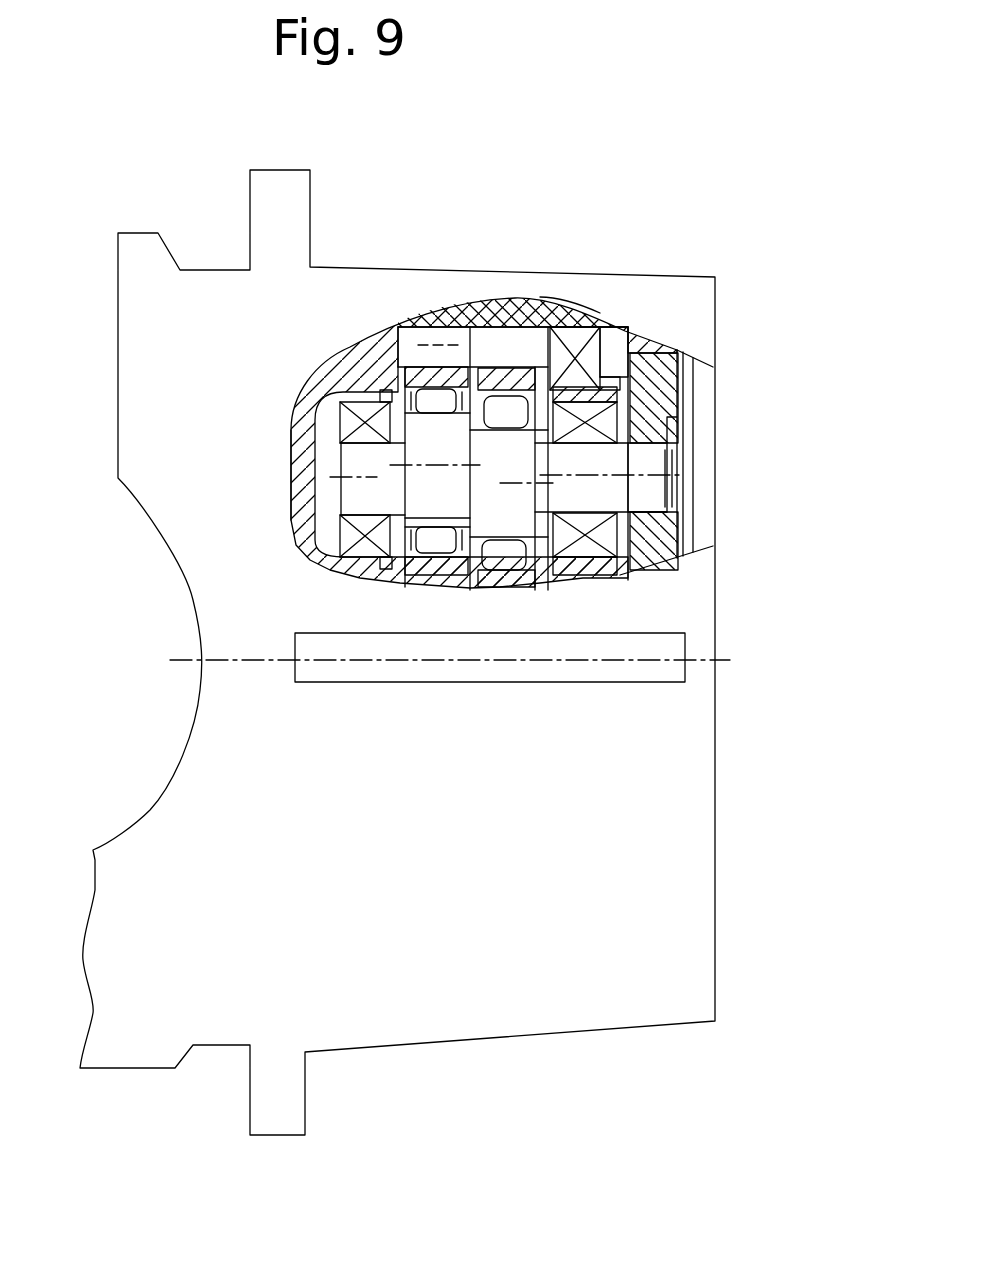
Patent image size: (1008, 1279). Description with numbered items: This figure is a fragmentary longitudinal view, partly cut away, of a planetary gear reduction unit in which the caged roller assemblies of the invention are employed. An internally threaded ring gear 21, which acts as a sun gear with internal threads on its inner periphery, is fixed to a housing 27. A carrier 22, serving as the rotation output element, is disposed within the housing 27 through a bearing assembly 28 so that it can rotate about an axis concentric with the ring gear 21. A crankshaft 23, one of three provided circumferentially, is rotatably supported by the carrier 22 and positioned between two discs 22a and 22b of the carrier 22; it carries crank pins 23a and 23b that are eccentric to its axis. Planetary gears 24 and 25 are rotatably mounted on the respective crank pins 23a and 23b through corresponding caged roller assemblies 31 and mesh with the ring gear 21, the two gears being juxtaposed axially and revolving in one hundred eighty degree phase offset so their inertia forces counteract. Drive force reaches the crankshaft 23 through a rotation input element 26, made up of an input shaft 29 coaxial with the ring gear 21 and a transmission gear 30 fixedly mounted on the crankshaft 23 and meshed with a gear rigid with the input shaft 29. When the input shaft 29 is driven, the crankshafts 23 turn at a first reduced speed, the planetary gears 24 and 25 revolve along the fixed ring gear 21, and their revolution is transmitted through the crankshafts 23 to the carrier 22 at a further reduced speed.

The housing 27 is at (222, 302).
The carrier 22 is at (323, 372).
The disc of the carrier 22a is at (298, 455).
The disc of the carrier 22b is at (677, 350).
The caged roller assembly 31 is at (430, 398).
The planetary gear 24 is at (445, 372).
The internally threaded ring gear 21 is at (512, 322).
The planetary gear 25 is at (540, 308).
The bearing assembly 28 is at (592, 318).
The transmission gear 30 is at (668, 398).
The crankshaft 23 is at (588, 500).
The crank pin 23a is at (440, 505).
The crank pin 23b is at (505, 520).
The input shaft 29 is at (652, 683).
The rotation input element 26 is at (608, 688).